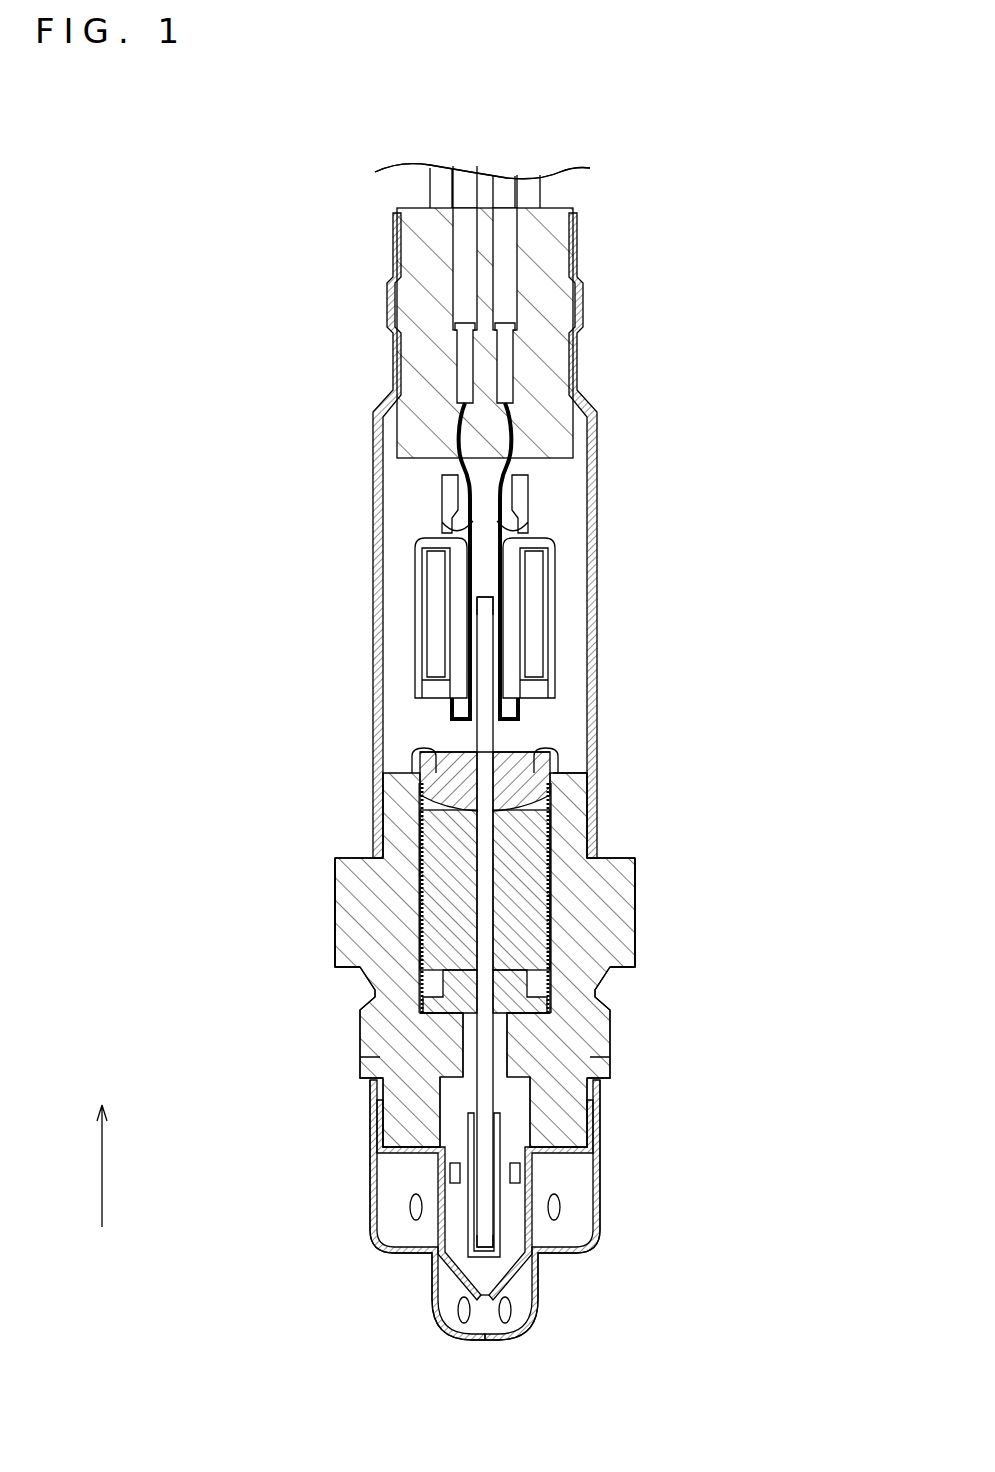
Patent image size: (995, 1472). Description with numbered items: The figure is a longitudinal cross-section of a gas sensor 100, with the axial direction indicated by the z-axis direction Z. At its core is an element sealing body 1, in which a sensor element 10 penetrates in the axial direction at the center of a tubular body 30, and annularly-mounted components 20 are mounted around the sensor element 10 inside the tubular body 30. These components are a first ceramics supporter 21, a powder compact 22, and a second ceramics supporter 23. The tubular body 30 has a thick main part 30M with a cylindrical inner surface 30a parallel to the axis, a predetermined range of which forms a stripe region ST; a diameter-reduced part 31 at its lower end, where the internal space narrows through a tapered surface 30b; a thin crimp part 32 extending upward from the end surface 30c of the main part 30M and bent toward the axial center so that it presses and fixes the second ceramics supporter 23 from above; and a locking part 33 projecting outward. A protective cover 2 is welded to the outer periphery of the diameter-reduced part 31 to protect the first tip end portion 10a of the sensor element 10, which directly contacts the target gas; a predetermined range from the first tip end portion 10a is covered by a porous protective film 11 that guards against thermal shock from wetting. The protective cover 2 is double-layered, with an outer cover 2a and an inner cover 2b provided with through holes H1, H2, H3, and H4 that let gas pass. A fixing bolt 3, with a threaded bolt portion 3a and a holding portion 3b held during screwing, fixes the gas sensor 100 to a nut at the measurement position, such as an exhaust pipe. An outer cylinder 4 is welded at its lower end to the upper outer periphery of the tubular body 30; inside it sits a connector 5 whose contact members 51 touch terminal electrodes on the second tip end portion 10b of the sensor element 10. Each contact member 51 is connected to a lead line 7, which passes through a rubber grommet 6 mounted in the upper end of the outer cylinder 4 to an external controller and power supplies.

The gas sensor 100 is at (228, 265).
The element sealing body 1 is at (761, 875).
The protective cover 2 is at (263, 1158).
The outer cover 2a is at (375, 1225).
The inner cover 2b is at (436, 1170).
The fixing bolt 3 is at (268, 920).
The bolt portion 3a is at (360, 1023).
The holding portion 3b is at (347, 942).
The outer cylinder 4 is at (380, 490).
The connector 5 is at (410, 604).
The rubber grommet 6 is at (415, 432).
The lead line 7 is at (465, 243).
The sensor element 10 is at (487, 1082).
The first tip end portion 10a is at (483, 1262).
The second tip end portion 10b is at (483, 593).
The protective film 11 is at (478, 1254).
The annularly-mounted components 20 is at (716, 796).
The first ceramics supporter 21 is at (513, 987).
The powder compact 22 is at (535, 845).
The second ceramics supporter 23 is at (535, 788).
The tubular body 30 is at (575, 1003).
The inner surface 30a is at (420, 757).
The tapered surface 30b is at (577, 1040).
The end surface 30c is at (585, 768).
The main part 30M is at (396, 893).
The diameter-reduced part 31 is at (563, 1120).
The crimp part 32 is at (547, 748).
The locking part 33 is at (372, 1063).
The contact member 51 is at (460, 724).
The through hole H1 is at (512, 1306).
The through hole H2 is at (562, 1205).
The through hole H3 is at (451, 1168).
The through hole H4 is at (488, 1300).
The stripe region ST is at (413, 790).
The z-axis direction Z is at (101, 1150).